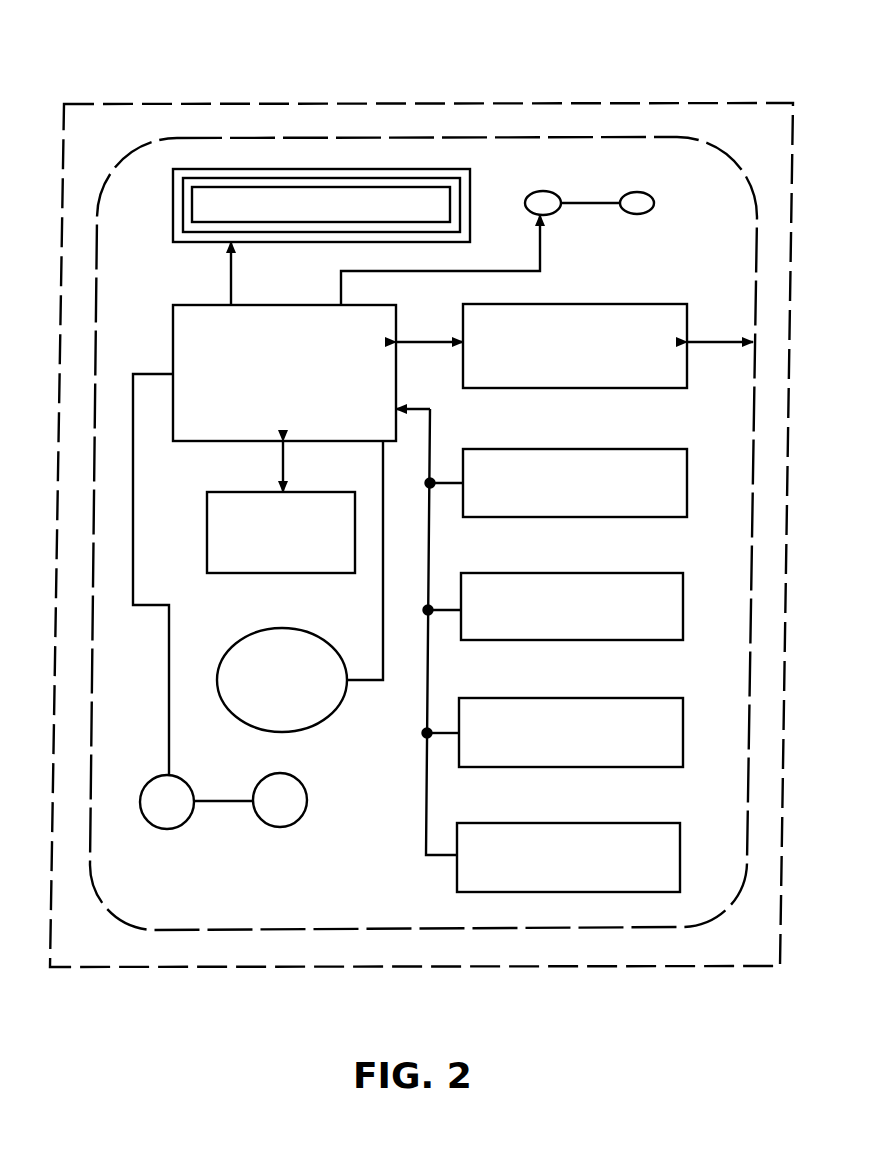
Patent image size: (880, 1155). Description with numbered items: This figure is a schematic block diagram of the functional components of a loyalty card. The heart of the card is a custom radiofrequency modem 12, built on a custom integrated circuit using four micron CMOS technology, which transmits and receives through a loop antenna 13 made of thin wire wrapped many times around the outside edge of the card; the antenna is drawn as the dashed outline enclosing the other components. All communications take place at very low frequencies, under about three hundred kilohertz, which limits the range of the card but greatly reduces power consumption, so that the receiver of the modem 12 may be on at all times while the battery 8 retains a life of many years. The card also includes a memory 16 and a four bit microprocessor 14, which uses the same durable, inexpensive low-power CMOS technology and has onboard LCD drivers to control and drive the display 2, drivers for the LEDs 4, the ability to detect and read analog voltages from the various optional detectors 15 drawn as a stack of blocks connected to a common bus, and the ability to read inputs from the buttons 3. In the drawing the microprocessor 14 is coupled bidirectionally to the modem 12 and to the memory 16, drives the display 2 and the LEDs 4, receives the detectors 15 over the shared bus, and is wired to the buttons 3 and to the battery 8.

The display 2 is at (327, 177).
The push buttons 3 is at (280, 828).
The indicator lights 4 is at (541, 191).
The battery 8 is at (235, 643).
The radiofrequency modem 12 is at (607, 304).
The loop antenna 13 is at (162, 930).
The four bit microprocessor 14 is at (202, 303).
The optional detectors 15 is at (550, 449).
The memory 16 is at (207, 527).